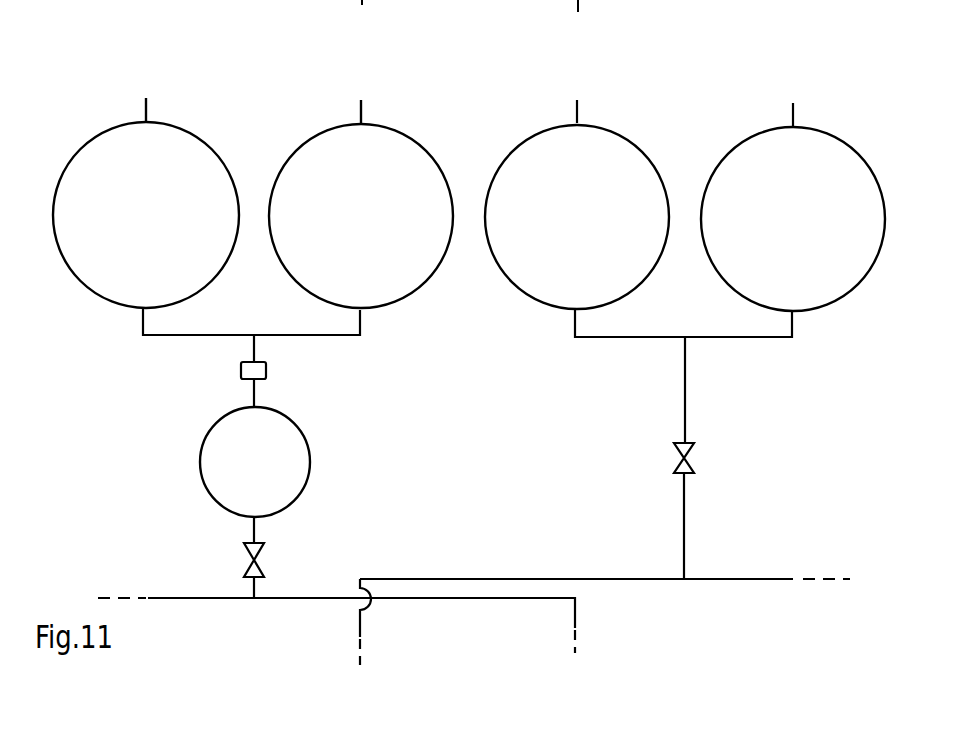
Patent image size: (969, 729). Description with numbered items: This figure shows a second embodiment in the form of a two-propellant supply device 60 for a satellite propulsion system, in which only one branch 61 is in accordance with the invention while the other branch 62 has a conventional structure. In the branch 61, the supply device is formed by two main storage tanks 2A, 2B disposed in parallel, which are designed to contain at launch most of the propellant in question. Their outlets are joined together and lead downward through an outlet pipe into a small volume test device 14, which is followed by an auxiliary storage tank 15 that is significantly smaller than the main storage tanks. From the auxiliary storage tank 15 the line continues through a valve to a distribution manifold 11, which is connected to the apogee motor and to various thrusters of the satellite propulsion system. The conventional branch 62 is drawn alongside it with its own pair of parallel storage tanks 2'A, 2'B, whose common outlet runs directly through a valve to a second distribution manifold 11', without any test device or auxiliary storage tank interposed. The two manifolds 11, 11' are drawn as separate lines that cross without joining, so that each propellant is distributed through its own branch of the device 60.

The main storage tank 2A is at (200, 137).
The main storage tank 2B is at (417, 141).
The first gas cylinder of second bank 2'A is at (594, 204).
The second gas cylinder of second bank 2'B is at (800, 202).
The small volume test device 14 is at (266, 371).
The auxiliary storage tank 15 is at (310, 462).
The distribution manifold 11 is at (336, 589).
The second supply line 11' is at (605, 554).
The two-propellant supply device 60 is at (152, 406).
The branch 61 is at (372, 75).
The branch 62 is at (739, 74).